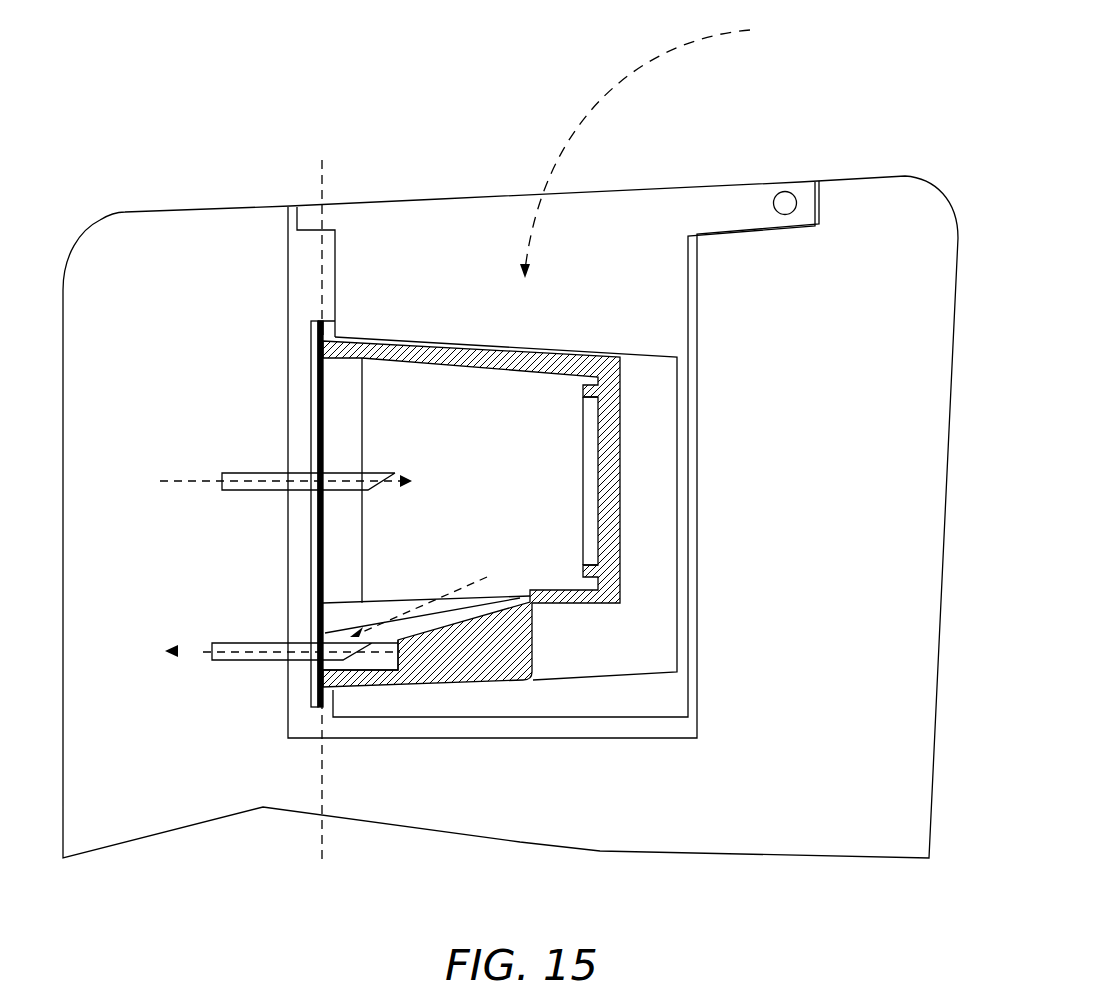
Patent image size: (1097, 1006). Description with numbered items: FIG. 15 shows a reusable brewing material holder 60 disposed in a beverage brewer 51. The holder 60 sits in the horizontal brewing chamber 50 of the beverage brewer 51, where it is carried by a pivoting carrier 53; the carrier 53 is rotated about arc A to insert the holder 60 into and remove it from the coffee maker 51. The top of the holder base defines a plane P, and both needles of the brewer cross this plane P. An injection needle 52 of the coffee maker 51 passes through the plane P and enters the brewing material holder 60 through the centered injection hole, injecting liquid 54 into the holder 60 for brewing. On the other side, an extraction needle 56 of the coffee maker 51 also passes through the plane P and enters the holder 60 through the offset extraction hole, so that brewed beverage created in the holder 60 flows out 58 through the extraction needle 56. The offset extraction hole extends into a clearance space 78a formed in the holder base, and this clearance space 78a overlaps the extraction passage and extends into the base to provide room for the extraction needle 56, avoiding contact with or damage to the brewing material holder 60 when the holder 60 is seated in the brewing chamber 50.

The beverage brewer 51 is at (105, 182).
The plane P is at (320, 193).
The arc A is at (563, 138).
The pivoting carrier 53 is at (517, 305).
The horizontal brewing chamber 50 is at (287, 383).
The reusable brewing material holder 60 is at (480, 444).
The injection needle 52 is at (258, 473).
The liquid 54 is at (202, 479).
The extraction needle 56 is at (257, 641).
The brewed beverage outflow 58 is at (194, 648).
The clearance space 78a is at (371, 648).